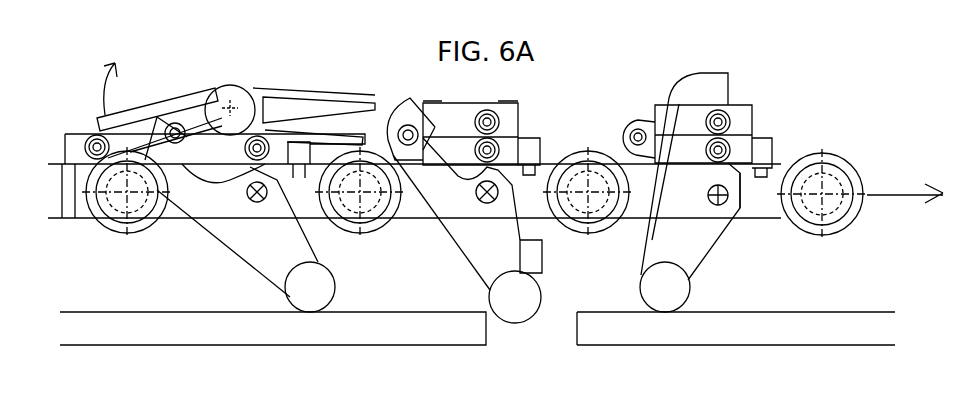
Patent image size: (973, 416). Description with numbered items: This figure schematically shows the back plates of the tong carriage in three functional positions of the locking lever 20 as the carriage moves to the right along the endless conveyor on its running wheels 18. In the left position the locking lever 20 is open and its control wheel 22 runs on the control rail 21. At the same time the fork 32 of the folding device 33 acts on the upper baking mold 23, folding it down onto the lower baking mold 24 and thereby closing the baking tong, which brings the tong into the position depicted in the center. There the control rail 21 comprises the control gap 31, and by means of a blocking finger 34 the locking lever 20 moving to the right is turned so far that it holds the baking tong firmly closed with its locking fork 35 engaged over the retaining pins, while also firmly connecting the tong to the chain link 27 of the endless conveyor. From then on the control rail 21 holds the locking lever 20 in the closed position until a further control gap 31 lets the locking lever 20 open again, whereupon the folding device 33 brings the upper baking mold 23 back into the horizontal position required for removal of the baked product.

The running wheels 18 is at (123, 233).
The locking lever 20 is at (237, 237).
The control rail 21 is at (173, 332).
The control wheel 22 is at (337, 278).
The upper baking mold 23 is at (72, 140).
The lower baking mold 24 is at (277, 150).
The chain links 27 is at (760, 207).
The control gap 31 is at (542, 337).
The fork 32 is at (158, 110).
The folding device 33 is at (230, 106).
The blocking finger 34 is at (533, 253).
The locking fork 35 is at (723, 90).